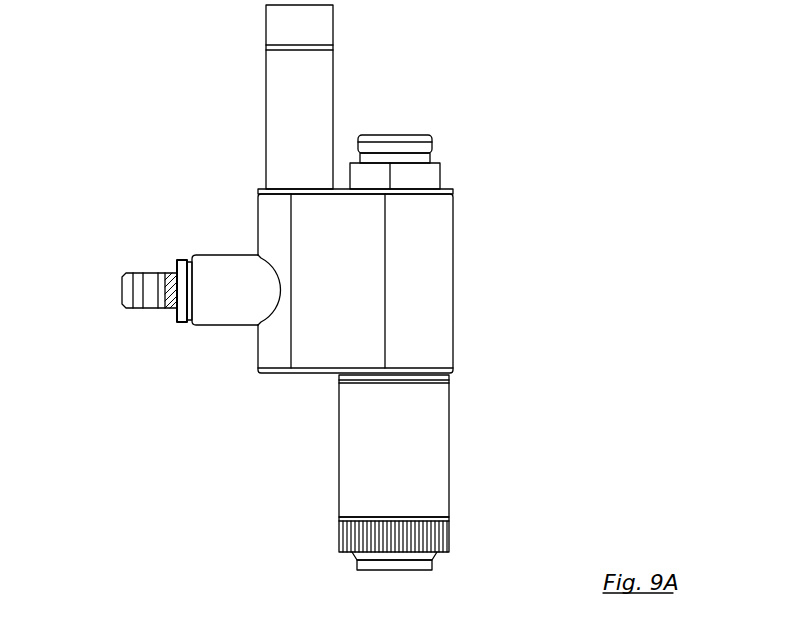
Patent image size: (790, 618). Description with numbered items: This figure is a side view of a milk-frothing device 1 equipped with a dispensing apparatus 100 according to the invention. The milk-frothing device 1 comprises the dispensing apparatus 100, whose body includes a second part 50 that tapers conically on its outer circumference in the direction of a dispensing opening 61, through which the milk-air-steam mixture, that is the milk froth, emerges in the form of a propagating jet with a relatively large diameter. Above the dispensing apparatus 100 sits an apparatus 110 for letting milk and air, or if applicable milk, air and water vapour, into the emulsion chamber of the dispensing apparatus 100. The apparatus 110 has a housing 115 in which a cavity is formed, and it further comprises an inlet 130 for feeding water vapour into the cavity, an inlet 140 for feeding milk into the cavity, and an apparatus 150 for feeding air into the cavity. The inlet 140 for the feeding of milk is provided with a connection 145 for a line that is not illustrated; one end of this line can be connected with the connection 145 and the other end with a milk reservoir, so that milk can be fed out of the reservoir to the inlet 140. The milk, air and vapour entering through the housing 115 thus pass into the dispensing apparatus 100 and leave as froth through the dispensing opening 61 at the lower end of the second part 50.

The milk-frothing device 1 is at (690, 57).
The second part 50 is at (339, 545).
The dispensing opening 61 is at (372, 575).
The dispensing apparatus 100 is at (432, 570).
The apparatus for letting milk and air into the emulsion chamber 110 is at (333, 5).
The housing 115 is at (258, 198).
The inlet for the feeding of vapour 130 is at (392, 135).
The inlet for the feeding of milk 140 is at (119, 290).
The connection 145 is at (128, 304).
The apparatus for the feeding of air 150 is at (263, 46).